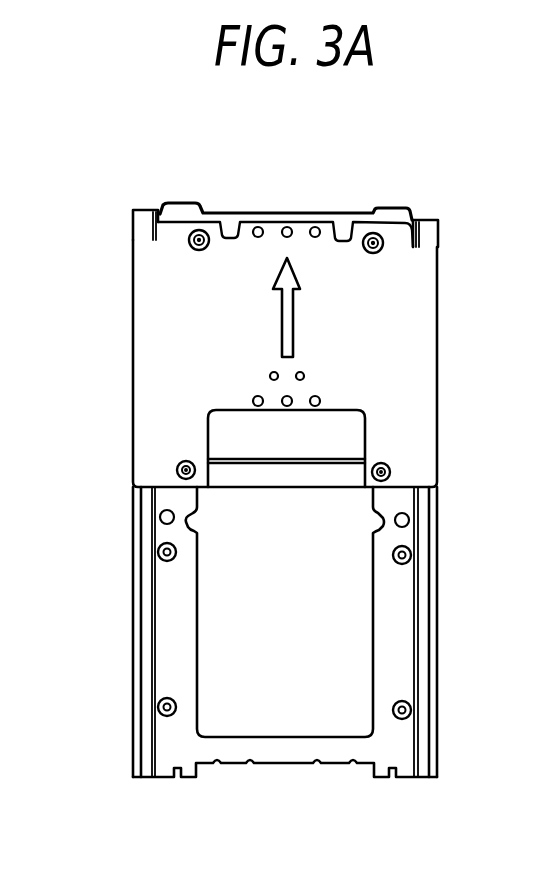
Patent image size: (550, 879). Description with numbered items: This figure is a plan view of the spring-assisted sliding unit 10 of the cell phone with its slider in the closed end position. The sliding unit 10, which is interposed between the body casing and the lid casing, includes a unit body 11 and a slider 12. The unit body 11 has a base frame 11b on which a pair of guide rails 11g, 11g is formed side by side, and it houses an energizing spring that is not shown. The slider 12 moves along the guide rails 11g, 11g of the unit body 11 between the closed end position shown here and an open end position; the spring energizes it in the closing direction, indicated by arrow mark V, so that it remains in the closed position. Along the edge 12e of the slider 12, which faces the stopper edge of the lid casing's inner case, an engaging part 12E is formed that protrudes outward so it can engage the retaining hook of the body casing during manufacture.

The spring-assisted sliding unit 10 is at (136, 171).
The unit body 11 is at (455, 517).
The base frame 11b is at (277, 766).
The guide rail 11g is at (146, 625).
The slider 12 is at (160, 329).
The edge 12e is at (258, 216).
The engaging part 12E is at (342, 216).